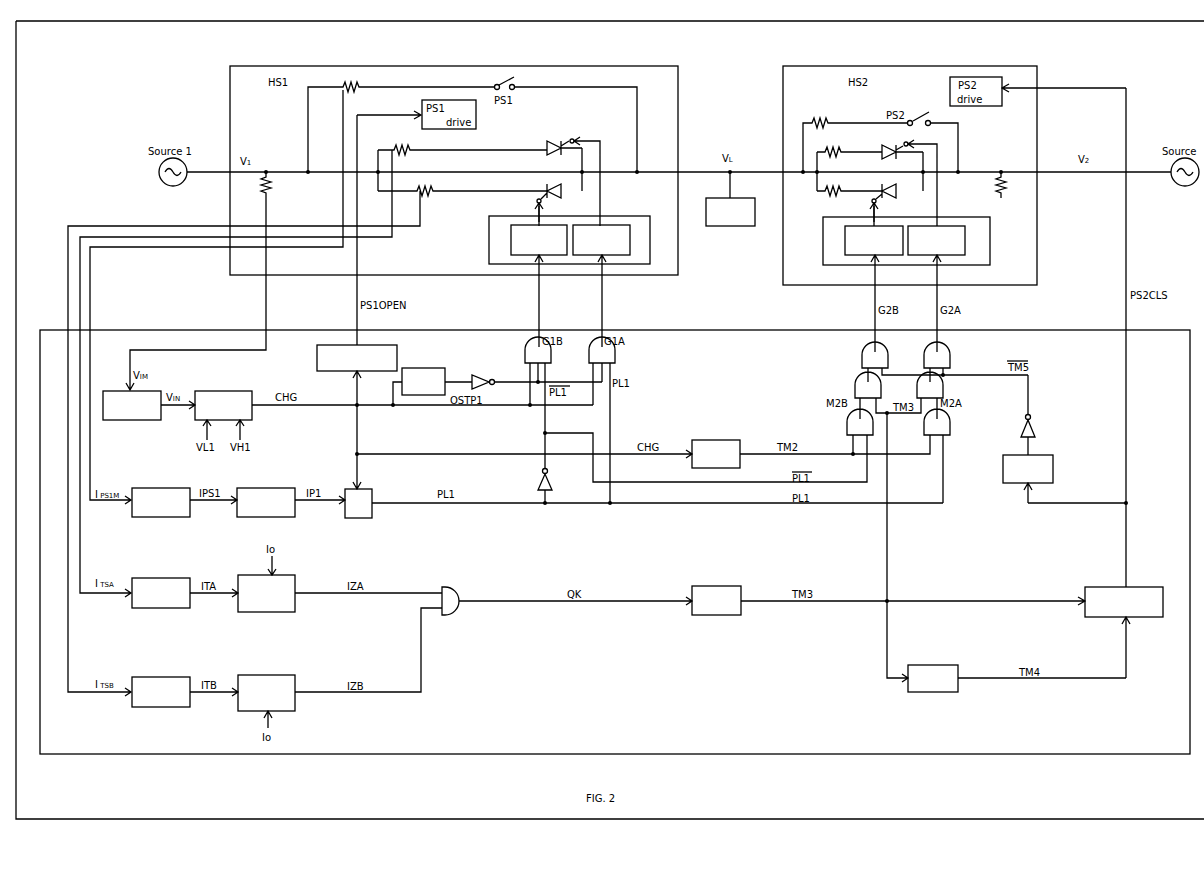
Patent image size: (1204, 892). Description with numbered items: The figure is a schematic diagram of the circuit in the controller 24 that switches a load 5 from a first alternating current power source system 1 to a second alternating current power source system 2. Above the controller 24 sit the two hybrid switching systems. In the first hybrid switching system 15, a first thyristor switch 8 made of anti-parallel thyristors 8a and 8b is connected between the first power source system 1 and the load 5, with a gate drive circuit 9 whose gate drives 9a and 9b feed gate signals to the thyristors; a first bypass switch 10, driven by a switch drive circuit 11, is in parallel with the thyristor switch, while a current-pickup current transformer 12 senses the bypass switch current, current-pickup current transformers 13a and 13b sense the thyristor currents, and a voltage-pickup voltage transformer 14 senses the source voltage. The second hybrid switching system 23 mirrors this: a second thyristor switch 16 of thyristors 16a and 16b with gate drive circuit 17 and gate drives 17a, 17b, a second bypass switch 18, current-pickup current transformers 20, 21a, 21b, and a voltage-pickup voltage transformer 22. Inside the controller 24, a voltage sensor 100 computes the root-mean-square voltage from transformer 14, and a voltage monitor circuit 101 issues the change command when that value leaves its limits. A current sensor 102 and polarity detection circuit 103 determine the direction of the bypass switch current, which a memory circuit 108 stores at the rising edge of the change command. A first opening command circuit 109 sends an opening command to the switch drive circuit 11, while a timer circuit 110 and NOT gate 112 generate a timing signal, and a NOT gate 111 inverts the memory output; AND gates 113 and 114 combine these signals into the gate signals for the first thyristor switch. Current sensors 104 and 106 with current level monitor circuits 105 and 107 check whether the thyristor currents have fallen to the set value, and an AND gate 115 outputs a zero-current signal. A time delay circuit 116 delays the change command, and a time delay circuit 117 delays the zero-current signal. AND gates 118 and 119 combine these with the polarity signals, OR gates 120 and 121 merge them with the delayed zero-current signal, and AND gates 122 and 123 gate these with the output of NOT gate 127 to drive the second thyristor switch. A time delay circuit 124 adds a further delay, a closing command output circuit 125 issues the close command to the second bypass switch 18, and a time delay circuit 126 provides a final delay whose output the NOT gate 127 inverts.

The first alternating current power source system 1 is at (169, 188).
The second alternating current power source system 2 is at (1182, 188).
The load 5 is at (731, 227).
The first thyristor switch 8 is at (544, 200).
The thyristor 8a is at (573, 176).
The thyristor 8b is at (549, 210).
The gate drive circuit 9 is at (639, 218).
The gate drive 9a is at (609, 240).
The gate drive 9b is at (531, 240).
The first bypass switch 10 is at (518, 83).
The switch drive circuit 11 is at (389, 224).
The current-pickup current transformer 12 is at (226, 297).
The current-pickup current transformer 13a is at (313, 366).
The current-pickup current transformer 13b is at (307, 435).
The voltage-pickup voltage transformer 14 is at (206, 281).
The first hybrid switching system 15 is at (401, 121).
The second thyristor switch 16 is at (882, 200).
The thyristor 16a is at (899, 180).
The thyristor 16b is at (896, 210).
The gate drive circuit 17 is at (977, 218).
The gate drive 17a is at (947, 240).
The gate drive 17b is at (864, 240).
The second bypass switch 18 is at (930, 108).
The current-pickup current transformer 20 is at (855, 136).
The current-pickup current transformer 21a is at (849, 142).
The current-pickup current transformer 21b is at (849, 198).
The voltage-pickup voltage transformer 22 is at (991, 185).
The second hybrid switching system 23 is at (910, 175).
The controller 24 is at (615, 542).
The voltage sensor 100 is at (130, 399).
The voltage monitor circuit 101 is at (206, 409).
The current sensor 102 is at (161, 496).
The polarity detection circuit 103 is at (267, 496).
The current sensor 104 is at (161, 586).
The current level monitor circuit 105 is at (242, 584).
The current sensor 106 is at (161, 685).
The current level monitor circuit 107 is at (242, 695).
The memory circuit 108 is at (370, 490).
The first opening command circuit 109 is at (313, 350).
The timer circuit 110 is at (417, 367).
The NOT gate 111 is at (537, 487).
The NOT gate 112 is at (475, 372).
The AND gate 113 is at (614, 352).
The AND gate 114 is at (525, 358).
The AND gate 115 is at (455, 586).
The time delay circuit 116 is at (811, 448).
The time delay circuit 117 is at (888, 593).
The AND gate 118 is at (847, 416).
The AND gate 119 is at (948, 450).
The OR gate 120 is at (875, 391).
The OR gate 121 is at (942, 383).
The AND gate 122 is at (931, 358).
The AND gate 123 is at (948, 359).
The time delay circuit 124 is at (1017, 672).
The PS2 closing command output circuit 125 is at (1111, 632).
The time delay circuit 126 is at (1065, 480).
The NOT gate 127 is at (1033, 423).